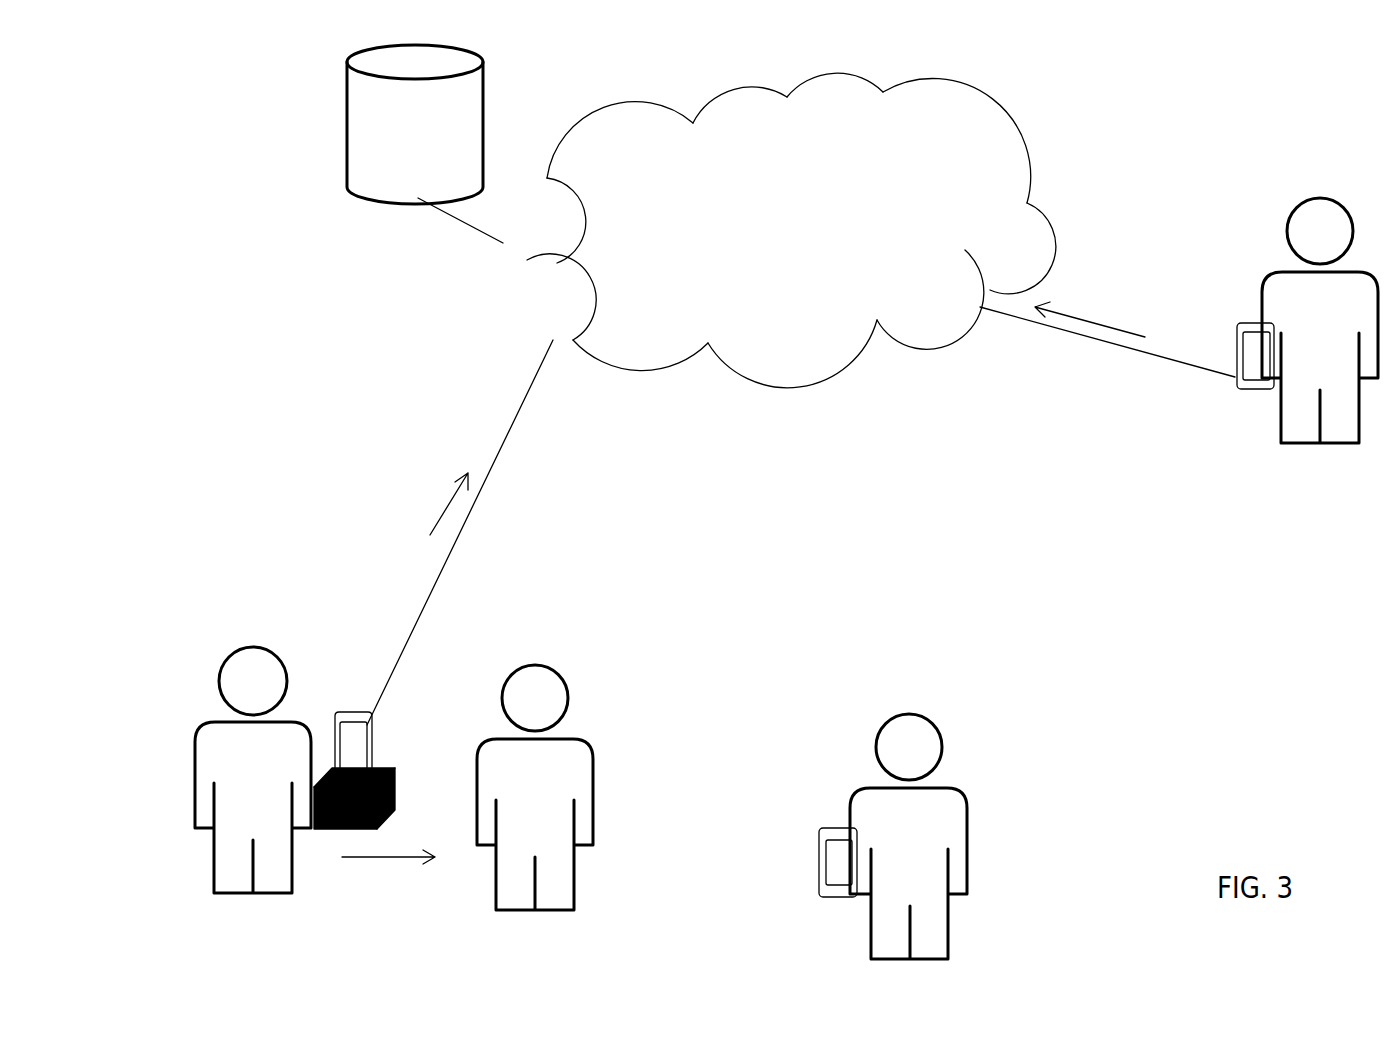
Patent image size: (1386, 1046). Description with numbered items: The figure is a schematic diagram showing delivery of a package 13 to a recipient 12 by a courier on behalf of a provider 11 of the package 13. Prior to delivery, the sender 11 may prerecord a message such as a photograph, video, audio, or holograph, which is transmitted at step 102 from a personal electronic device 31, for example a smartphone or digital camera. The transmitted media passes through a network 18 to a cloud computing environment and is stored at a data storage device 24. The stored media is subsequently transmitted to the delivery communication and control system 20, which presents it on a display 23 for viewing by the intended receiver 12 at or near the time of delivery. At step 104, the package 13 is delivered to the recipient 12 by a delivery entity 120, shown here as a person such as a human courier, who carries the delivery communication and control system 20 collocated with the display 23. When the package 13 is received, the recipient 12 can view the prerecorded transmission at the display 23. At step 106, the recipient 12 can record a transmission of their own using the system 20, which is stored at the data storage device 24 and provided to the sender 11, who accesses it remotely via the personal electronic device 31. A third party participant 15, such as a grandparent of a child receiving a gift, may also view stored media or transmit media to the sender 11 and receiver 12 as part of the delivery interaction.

The data storage device 24 is at (425, 144).
The network 18 is at (715, 235).
The provider 11 is at (1333, 197).
The personal electronic device 31 is at (1237, 357).
The step of transmitting prerecorded message 102 is at (1073, 310).
The step of recipient recording a transmission 106 is at (443, 502).
The delivery entity 120 is at (220, 663).
The delivery communication and control system 20 is at (355, 708).
The display 23 is at (355, 742).
The package 13 is at (385, 770).
The step of delivering package 104 is at (405, 855).
The recipient 12 is at (555, 700).
The third party participant 15 is at (885, 720).